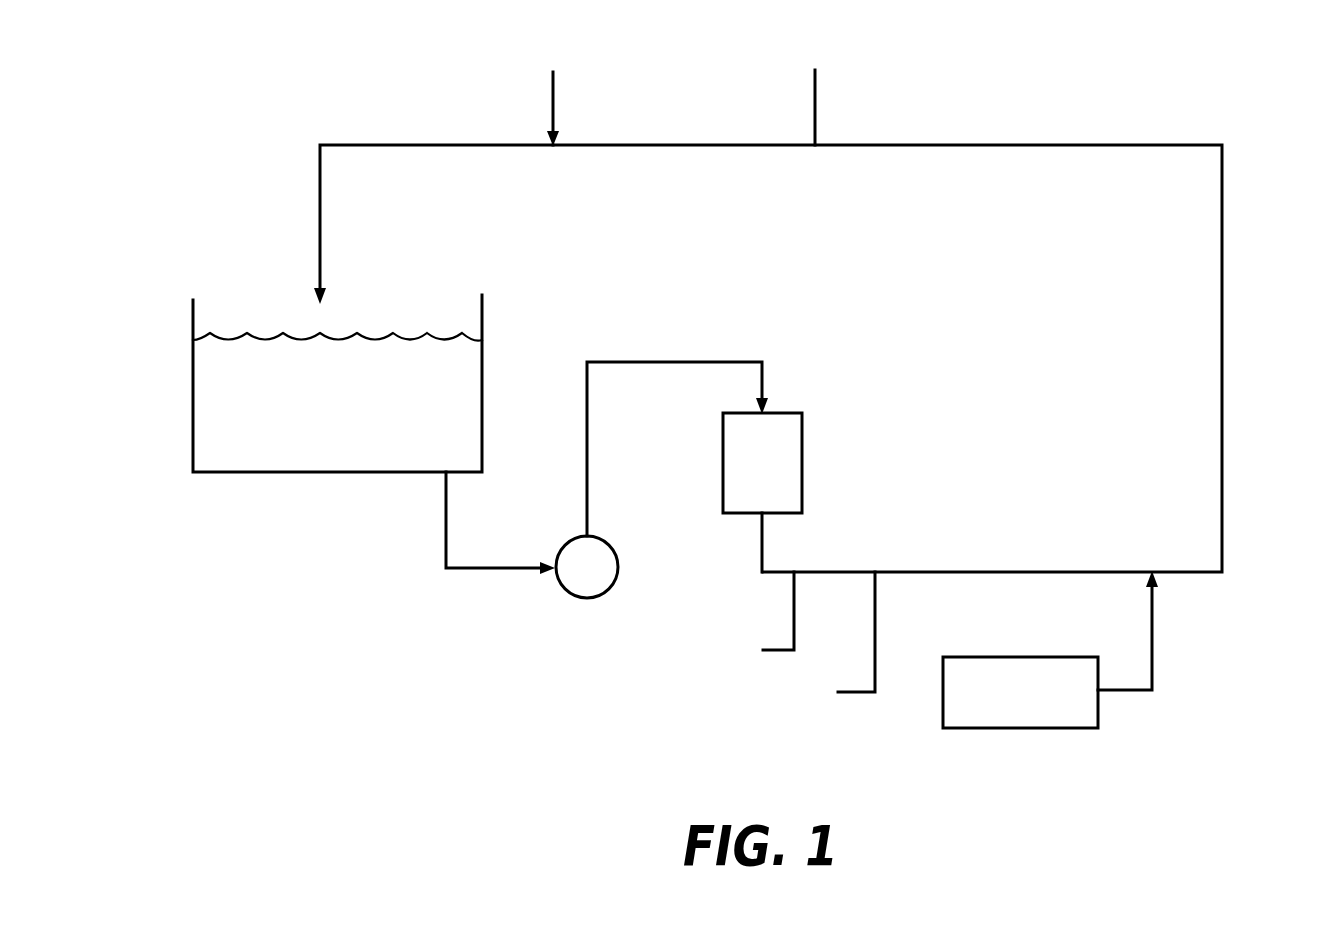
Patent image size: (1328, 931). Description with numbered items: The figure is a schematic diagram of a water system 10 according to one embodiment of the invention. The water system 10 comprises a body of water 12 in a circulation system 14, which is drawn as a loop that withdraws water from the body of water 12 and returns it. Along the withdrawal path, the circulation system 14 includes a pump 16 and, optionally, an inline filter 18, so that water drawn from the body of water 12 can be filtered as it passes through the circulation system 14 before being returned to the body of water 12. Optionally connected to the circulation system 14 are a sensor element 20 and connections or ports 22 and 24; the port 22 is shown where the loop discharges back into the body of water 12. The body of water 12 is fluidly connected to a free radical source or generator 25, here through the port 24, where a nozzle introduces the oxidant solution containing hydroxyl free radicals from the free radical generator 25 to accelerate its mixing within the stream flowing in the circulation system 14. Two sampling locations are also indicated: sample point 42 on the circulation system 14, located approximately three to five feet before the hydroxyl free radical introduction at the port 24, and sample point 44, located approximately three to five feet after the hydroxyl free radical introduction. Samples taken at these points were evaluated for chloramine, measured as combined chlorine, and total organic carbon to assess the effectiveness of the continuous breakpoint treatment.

The water system 10 is at (345, 92).
The body of water 12 is at (257, 473).
The circulation system 14 is at (1224, 249).
The pump 16 is at (572, 596).
The inline filter 18 is at (801, 413).
The sensor element 20 is at (783, 651).
The port 22 is at (553, 78).
The port 24 is at (1155, 641).
The free radical generator 25 is at (1057, 729).
The sample point 42 is at (868, 693).
The sample point 44 is at (814, 78).